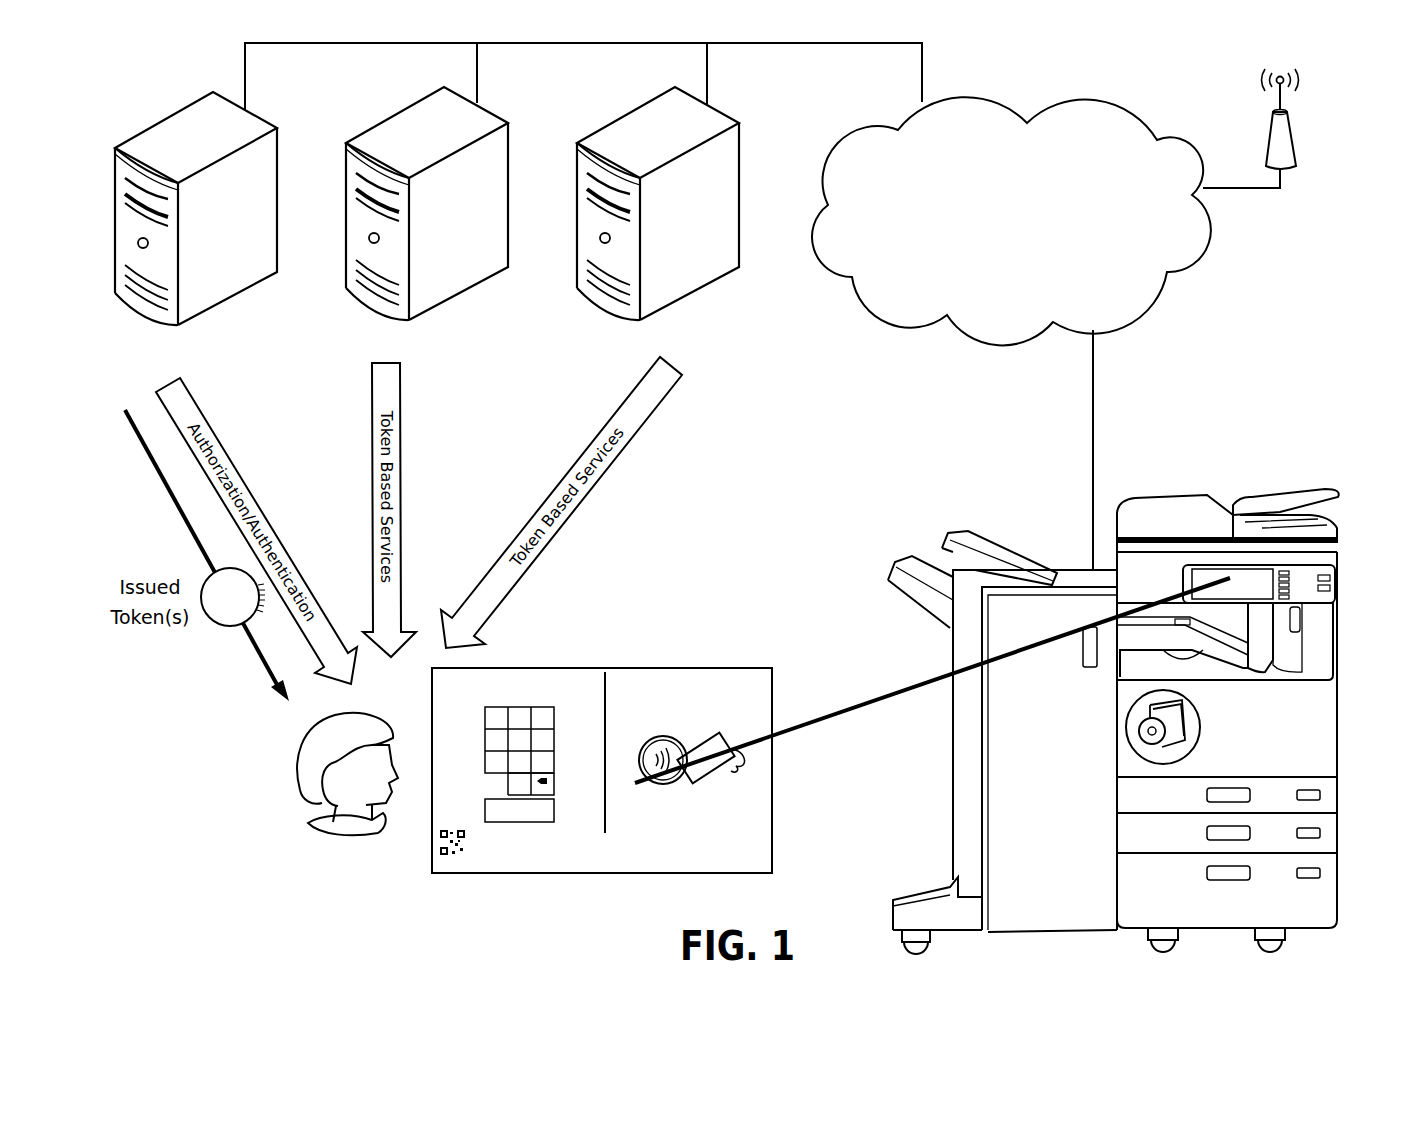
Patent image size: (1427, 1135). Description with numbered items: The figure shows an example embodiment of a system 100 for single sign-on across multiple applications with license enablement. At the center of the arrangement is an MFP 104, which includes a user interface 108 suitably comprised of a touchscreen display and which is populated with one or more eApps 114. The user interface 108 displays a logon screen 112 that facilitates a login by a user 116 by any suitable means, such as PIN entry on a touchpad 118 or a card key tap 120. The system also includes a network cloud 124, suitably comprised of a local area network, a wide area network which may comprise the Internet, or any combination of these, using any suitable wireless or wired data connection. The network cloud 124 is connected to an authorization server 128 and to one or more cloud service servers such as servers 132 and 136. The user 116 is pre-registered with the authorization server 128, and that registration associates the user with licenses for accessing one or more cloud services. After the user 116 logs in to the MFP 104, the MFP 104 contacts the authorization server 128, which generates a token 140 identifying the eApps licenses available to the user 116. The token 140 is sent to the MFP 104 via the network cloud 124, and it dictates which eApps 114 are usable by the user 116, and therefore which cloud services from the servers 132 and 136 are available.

The system 100 is at (1348, 120).
The MFP 104 is at (1157, 721).
The user interface 108 is at (1312, 576).
The logon screen 112 is at (602, 758).
The eApps 114 is at (1128, 712).
The user 116 is at (297, 778).
The touchpad 118 is at (537, 712).
The card key tap 120 is at (708, 775).
The network cloud 124 is at (983, 343).
The authorization server 128 is at (268, 118).
The cloud service server 132 is at (501, 114).
The cloud service server 136 is at (739, 192).
The token 140 is at (223, 627).